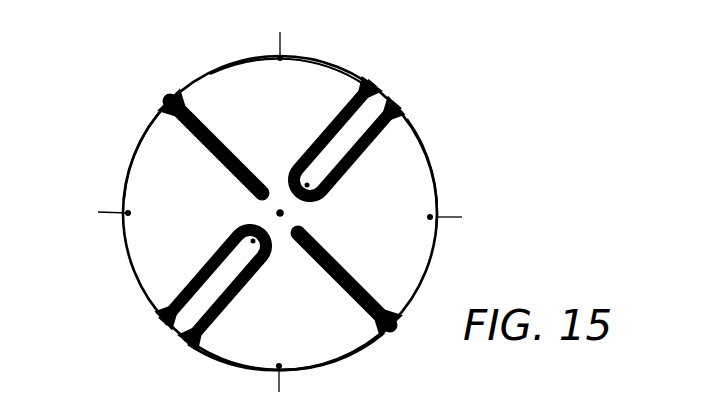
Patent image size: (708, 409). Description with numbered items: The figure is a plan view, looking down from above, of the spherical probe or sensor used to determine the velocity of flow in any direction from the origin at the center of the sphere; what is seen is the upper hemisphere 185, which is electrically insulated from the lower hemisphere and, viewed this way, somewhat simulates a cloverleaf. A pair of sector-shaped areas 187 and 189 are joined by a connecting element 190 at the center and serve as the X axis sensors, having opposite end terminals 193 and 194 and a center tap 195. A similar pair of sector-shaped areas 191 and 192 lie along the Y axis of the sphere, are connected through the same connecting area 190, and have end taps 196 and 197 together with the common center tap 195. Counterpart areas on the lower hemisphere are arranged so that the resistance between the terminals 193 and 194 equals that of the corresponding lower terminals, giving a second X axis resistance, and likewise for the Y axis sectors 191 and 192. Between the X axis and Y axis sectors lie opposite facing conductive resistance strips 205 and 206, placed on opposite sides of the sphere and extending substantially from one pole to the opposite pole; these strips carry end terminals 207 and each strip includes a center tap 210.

The upper hemisphere 185 is at (128, 273).
The sector-shaped area 187 is at (162, 150).
The sector-shaped area 189 is at (415, 168).
The connecting element 190 is at (281, 222).
The sector-shaped area 191 is at (305, 78).
The sector-shaped area 192 is at (308, 345).
The end terminal 193 is at (127, 218).
The end terminal 194 is at (430, 217).
The center tap 195 is at (281, 213).
The end tap 196 is at (280, 58).
The end tap 197 is at (270, 366).
The conductive resistance strip 205 is at (185, 303).
The conductive resistance strip 206 is at (373, 125).
The end terminal 207 is at (307, 184).
The center tap 210 is at (390, 105).